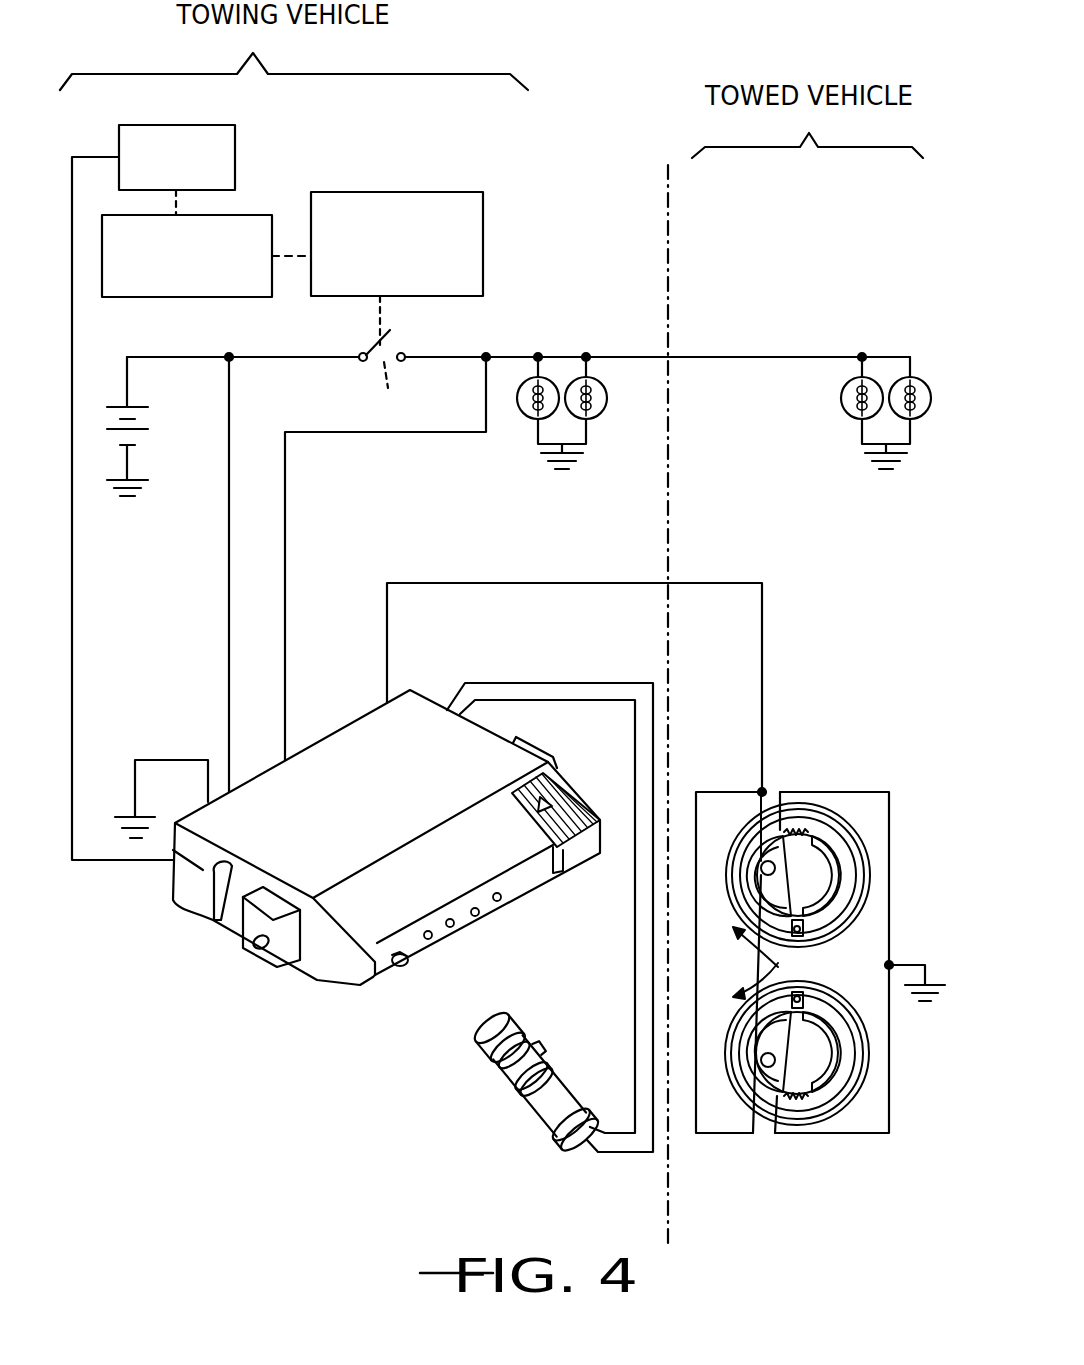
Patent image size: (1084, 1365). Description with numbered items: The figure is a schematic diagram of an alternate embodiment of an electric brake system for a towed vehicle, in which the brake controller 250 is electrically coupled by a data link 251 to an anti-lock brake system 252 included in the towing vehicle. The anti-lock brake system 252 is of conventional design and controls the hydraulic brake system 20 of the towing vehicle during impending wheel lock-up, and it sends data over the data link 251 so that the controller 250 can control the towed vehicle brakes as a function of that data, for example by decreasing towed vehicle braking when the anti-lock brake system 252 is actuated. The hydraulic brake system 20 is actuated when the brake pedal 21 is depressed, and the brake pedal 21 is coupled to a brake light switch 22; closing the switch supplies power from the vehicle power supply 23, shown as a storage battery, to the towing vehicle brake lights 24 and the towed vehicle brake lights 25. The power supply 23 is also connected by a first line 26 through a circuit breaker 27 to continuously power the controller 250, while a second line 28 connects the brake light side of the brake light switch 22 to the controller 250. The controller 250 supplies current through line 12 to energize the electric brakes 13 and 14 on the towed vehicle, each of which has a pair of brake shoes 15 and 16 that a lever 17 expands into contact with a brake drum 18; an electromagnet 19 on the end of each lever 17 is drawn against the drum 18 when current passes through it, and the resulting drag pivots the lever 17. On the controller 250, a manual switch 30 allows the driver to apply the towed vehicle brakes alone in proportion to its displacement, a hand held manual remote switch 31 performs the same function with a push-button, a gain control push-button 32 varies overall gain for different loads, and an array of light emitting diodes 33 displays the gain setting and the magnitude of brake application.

The line 12 is at (593, 547).
The electric brake 13 is at (867, 848).
The electric brake 14 is at (835, 1110).
The brake shoe 15 is at (750, 850).
The brake shoe 16 is at (858, 913).
The lever 17 is at (783, 898).
The brake drum 18 is at (733, 1012).
The electromagnet 19 is at (775, 869).
The hydraulic brake system 20 is at (200, 297).
The brake pedal 21 is at (483, 257).
The brake light switch 22 is at (381, 379).
The vehicle power supply 23 is at (140, 432).
The towing vehicle brake lights 24 is at (525, 417).
The towed vehicle brake lights 25 is at (912, 380).
The first line 26 is at (227, 632).
The circuit breaker 27 is at (226, 411).
The second line 28 is at (285, 612).
The manual switch 30 is at (582, 857).
The manual remote switch 31 is at (553, 1108).
The gain control push-button 32 is at (408, 967).
The light emitting diodes 33 is at (505, 905).
The brake controller 250 is at (430, 697).
The data link 251 is at (72, 595).
The anti-lock brake system 252 is at (235, 155).